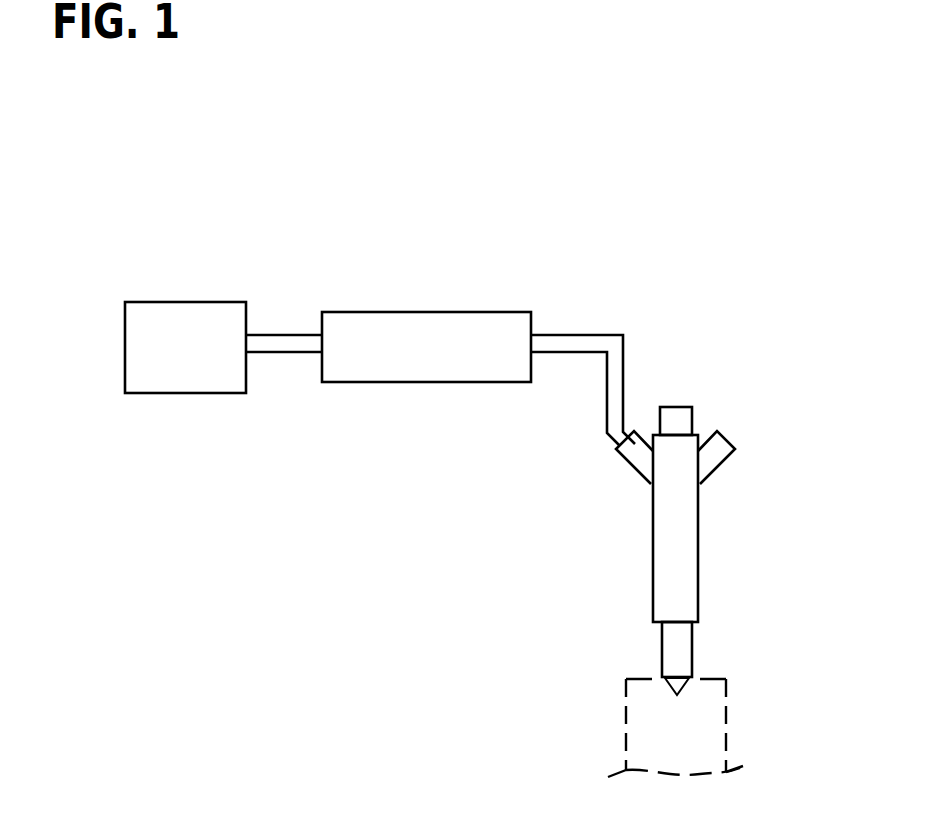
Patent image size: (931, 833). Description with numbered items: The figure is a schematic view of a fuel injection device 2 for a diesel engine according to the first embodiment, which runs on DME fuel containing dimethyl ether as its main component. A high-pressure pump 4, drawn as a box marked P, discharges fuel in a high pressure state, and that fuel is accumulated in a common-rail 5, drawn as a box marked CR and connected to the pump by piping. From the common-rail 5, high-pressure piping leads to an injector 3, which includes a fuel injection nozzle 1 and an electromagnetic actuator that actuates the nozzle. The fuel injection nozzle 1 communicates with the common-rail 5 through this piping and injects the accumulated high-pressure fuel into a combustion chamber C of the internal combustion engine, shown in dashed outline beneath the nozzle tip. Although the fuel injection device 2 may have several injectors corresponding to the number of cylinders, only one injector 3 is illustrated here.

The fuel injection nozzle 1 is at (692, 647).
The fuel injection device 2 is at (742, 237).
The injector 3 is at (732, 408).
The high-pressure pump 4 is at (198, 394).
The common-rail 5 is at (448, 382).
The combustion chamber C is at (727, 715).